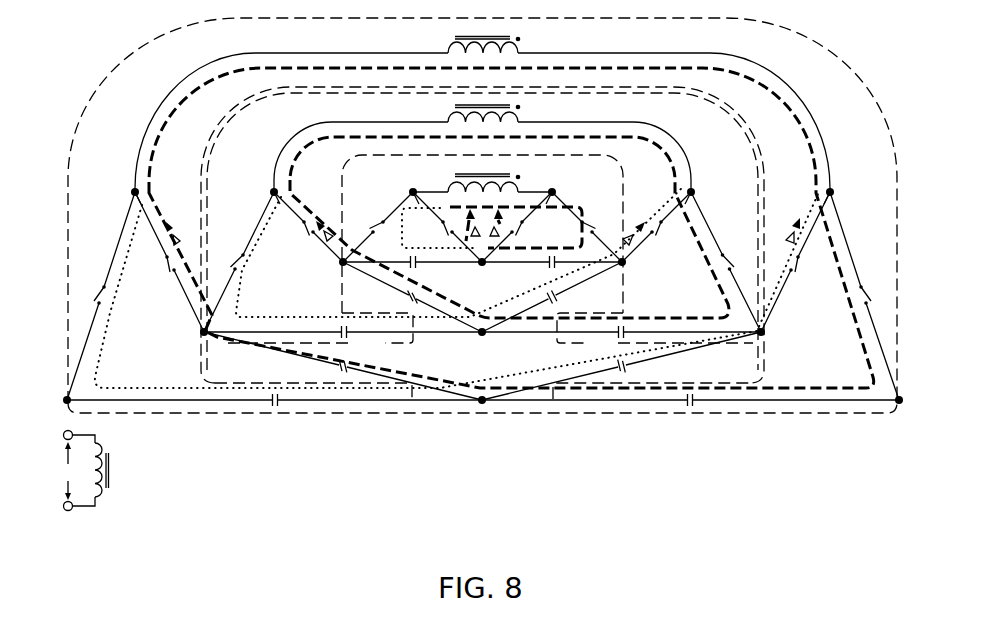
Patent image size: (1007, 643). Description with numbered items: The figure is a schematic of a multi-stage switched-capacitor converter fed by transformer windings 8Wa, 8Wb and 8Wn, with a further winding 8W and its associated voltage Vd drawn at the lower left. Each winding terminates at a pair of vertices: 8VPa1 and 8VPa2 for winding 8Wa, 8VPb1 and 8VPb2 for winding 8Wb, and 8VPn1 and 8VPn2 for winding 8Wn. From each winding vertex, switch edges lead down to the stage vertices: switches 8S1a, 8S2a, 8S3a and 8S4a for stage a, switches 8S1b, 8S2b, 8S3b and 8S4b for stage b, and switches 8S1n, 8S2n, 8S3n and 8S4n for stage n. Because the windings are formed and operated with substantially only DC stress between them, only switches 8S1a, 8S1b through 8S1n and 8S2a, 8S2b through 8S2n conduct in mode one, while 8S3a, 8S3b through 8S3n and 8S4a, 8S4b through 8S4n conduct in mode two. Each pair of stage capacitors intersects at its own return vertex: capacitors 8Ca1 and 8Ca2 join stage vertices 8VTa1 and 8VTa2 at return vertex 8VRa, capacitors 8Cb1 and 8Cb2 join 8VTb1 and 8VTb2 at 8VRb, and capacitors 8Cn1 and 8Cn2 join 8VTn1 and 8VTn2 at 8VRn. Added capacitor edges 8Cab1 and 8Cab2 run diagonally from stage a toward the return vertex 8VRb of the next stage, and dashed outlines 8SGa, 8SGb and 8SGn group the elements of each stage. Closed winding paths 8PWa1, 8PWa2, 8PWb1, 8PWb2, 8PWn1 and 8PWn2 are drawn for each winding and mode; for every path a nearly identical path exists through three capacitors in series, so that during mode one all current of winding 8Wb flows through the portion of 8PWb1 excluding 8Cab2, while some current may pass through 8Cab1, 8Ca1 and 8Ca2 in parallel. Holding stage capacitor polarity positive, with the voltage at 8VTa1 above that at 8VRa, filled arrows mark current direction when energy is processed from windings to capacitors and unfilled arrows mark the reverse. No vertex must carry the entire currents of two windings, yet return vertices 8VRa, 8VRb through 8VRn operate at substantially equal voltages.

The winding 8Wn is at (455, 36).
The winding 8Wb is at (455, 105).
The transformer winding of stage a 8Wa is at (455, 175).
The transformer primary winding 8W is at (86, 471).
The input voltage Vd is at (67, 471).
The winding terminal node n2 8VPn2 is at (133, 189).
The winding terminal node n1 8VPn1 is at (833, 189).
The winding terminal node b2 8VPb2 is at (272, 189).
The winding terminal node b1 8VPb1 is at (694, 189).
The winding terminal node a2 8VPa2 is at (411, 189).
The winding terminal node a1 8VPa1 is at (554, 189).
The closed winding path 8PWn2 is at (135, 213).
The closed winding path 8PWn1 is at (830, 213).
The closed winding path 8PWb2 is at (277, 212).
The closed winding path 8PWb1 is at (688, 212).
The closed winding path 8PWa2 is at (410, 211).
The closed winding path 8PWa1 is at (556, 211).
The switch 8S1a is at (446, 229).
The switch 8S2a is at (588, 224).
The switch 8S3a is at (378, 224).
The switch 8S4a is at (519, 229).
The switch 8S1b is at (307, 230).
The switch 8S2b is at (729, 260).
The switch 8S3b is at (236, 260).
The switch 8S4b is at (658, 230).
The switch 8S1n is at (167, 264).
The switch 8S2n is at (866, 292).
The switch 8S3n is at (100, 292).
The switch 8S4n is at (798, 264).
The stage capacitor 8Ca1 is at (548, 266).
The stage capacitor 8Ca2 is at (418, 266).
The capacitor b1 8Cb1 is at (617, 336).
The capacitor b2 8Cb2 is at (348, 336).
The capacitor n1 8Cn1 is at (688, 402).
The capacitor n2 8Cn2 is at (279, 404).
The capacitor edge 8Cab1 is at (558, 297).
The capacitor edge 8Cab2 is at (407, 297).
The vertex 8VTa1 is at (626, 262).
The terminal node a2 8VTa2 is at (339, 262).
The terminal node b1 8VTb1 is at (765, 332).
The terminal node b2 8VTb2 is at (200, 332).
The terminal node n1 8VTn1 is at (904, 400).
The terminal node n2 8VTn2 is at (62, 400).
The return vertex 8VRa is at (483, 268).
The return vertex 8VRb is at (483, 338).
The return vertex 8VRn is at (483, 405).
The stage group a 8SGa is at (435, 283).
The stage group b 8SGb is at (426, 344).
The stage group n 8SGn is at (426, 412).